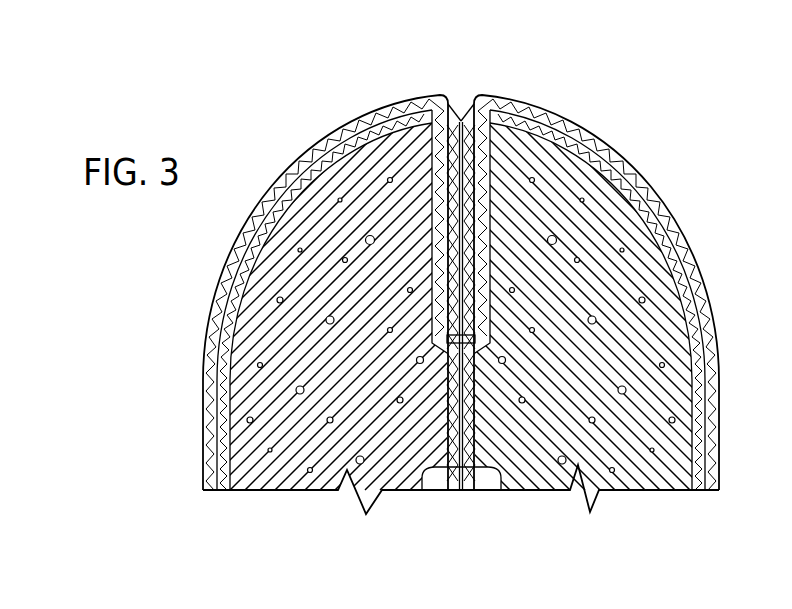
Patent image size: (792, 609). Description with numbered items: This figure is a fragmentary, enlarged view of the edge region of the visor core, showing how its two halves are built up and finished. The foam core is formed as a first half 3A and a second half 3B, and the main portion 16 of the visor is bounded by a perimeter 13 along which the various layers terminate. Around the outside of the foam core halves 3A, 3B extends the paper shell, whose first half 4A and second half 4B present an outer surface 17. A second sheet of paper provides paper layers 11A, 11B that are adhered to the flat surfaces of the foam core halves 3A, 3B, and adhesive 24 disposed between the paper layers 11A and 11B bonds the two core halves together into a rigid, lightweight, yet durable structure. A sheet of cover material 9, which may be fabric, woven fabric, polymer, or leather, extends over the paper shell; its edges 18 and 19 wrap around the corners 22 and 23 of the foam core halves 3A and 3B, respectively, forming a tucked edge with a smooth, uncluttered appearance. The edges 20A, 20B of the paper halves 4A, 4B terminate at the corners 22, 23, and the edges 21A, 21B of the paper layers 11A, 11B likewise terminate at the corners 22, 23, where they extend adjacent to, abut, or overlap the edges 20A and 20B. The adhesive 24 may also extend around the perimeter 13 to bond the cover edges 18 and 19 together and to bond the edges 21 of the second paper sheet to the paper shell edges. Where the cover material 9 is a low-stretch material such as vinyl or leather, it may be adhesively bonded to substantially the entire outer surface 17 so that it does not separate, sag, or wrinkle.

The first half of foam core 3A is at (302, 480).
The second half of foam core 3B is at (632, 470).
The first half of paper sheet 4A is at (214, 436).
The second half of paper sheet 4B is at (708, 457).
The cover material 9 is at (723, 390).
The first paper layer 11A is at (425, 472).
The second paper layer 11B is at (505, 490).
The perimeter 13 is at (314, 109).
The main portion 16 is at (503, 86).
The outer surface of paper shell 17 is at (222, 350).
The edge of cover material 18 is at (433, 202).
The edge of cover material 19 is at (470, 257).
The edge of first paper half 20A is at (433, 310).
The edge of second paper half 20B is at (491, 103).
The edges of second paper sheet 21 is at (491, 178).
The edge of first paper layer 21A is at (447, 98).
The edge of second paper layer 21B is at (460, 100).
The corner of first foam core half 22 is at (438, 92).
The corner of second foam core half 23 is at (478, 98).
The adhesive 24 is at (460, 483).